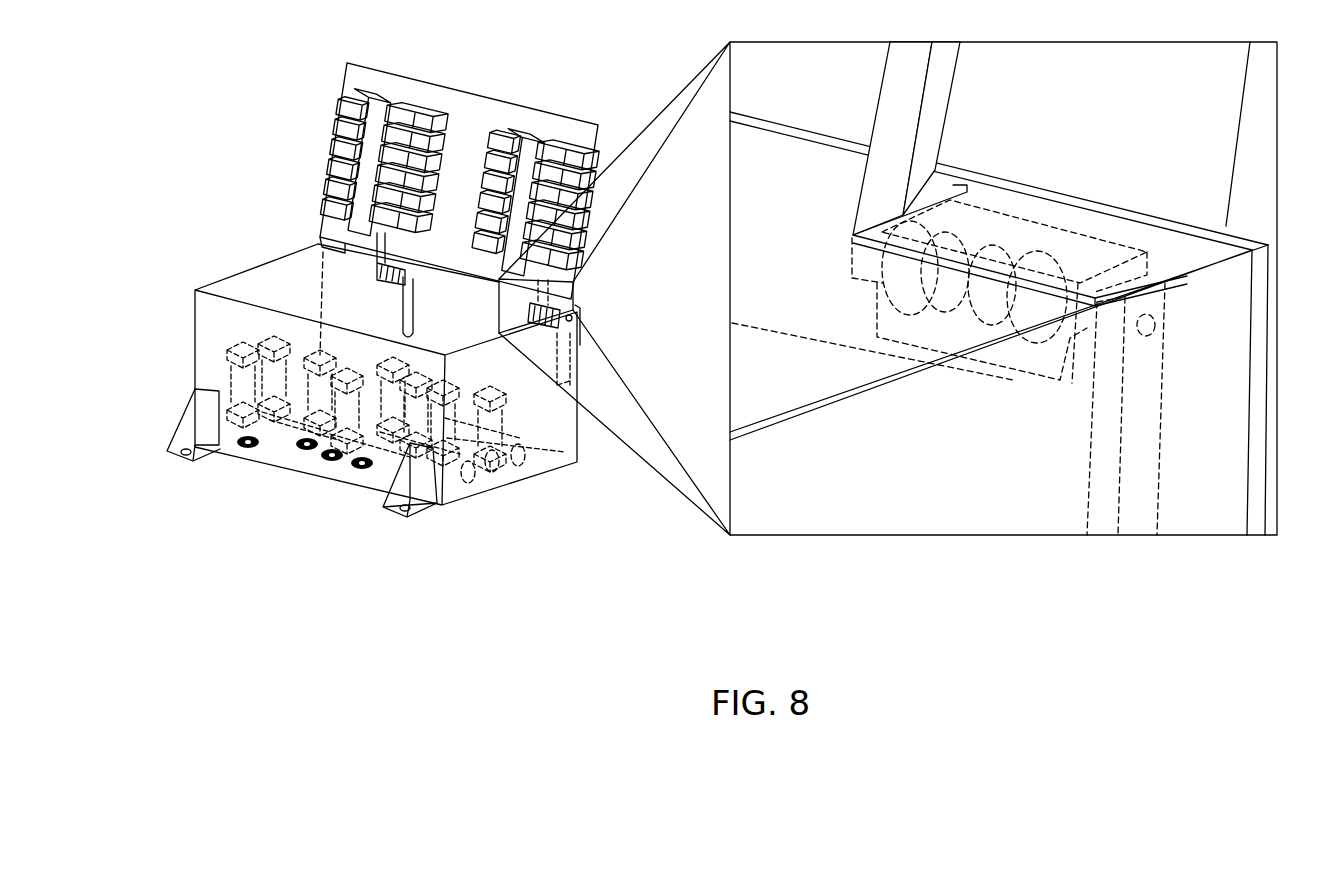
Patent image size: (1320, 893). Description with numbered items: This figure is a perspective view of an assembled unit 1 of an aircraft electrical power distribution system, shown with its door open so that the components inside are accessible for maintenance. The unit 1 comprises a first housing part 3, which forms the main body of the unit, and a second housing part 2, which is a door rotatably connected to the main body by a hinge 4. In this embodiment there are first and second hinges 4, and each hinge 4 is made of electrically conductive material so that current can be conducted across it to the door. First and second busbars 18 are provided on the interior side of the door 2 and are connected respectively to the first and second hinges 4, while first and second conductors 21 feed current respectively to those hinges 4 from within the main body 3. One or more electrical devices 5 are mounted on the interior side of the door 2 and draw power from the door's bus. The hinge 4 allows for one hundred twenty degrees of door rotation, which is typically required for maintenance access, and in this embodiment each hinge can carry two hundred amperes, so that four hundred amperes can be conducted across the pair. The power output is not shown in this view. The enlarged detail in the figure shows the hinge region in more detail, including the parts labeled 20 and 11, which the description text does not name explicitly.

The unit 1 is at (262, 98).
The second housing part 2 is at (480, 102).
The first housing part 3 is at (194, 330).
The hinge 4 is at (378, 277).
The electrical devices 5 is at (405, 104).
The hinge shaft component 11 is at (1012, 248).
The busbars 18 is at (380, 94).
The hinge bar 20 is at (888, 89).
The conductors 21 is at (414, 330).